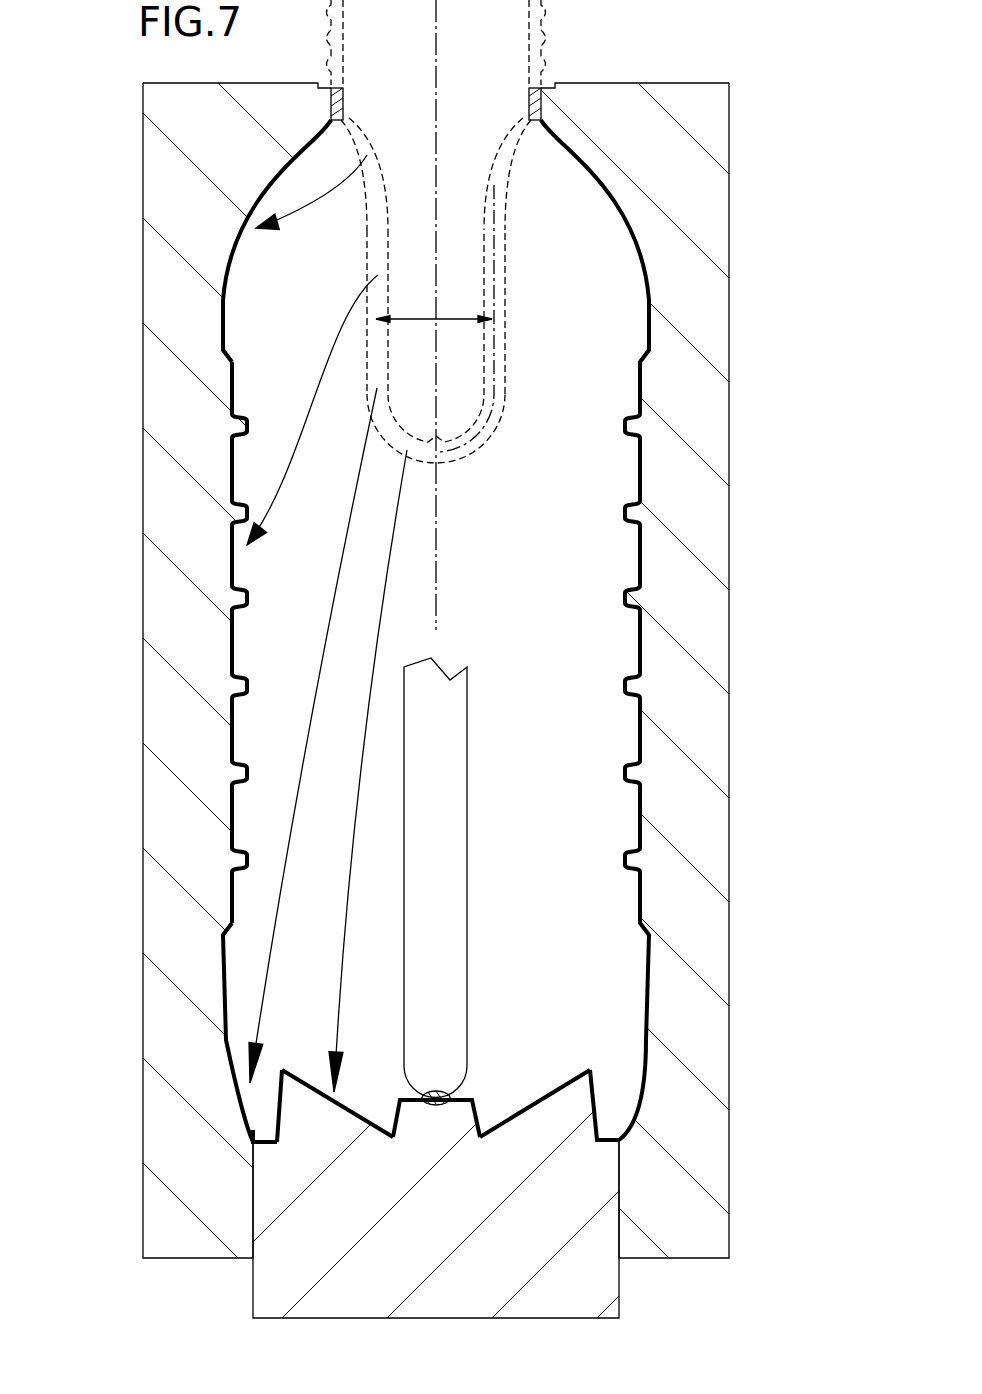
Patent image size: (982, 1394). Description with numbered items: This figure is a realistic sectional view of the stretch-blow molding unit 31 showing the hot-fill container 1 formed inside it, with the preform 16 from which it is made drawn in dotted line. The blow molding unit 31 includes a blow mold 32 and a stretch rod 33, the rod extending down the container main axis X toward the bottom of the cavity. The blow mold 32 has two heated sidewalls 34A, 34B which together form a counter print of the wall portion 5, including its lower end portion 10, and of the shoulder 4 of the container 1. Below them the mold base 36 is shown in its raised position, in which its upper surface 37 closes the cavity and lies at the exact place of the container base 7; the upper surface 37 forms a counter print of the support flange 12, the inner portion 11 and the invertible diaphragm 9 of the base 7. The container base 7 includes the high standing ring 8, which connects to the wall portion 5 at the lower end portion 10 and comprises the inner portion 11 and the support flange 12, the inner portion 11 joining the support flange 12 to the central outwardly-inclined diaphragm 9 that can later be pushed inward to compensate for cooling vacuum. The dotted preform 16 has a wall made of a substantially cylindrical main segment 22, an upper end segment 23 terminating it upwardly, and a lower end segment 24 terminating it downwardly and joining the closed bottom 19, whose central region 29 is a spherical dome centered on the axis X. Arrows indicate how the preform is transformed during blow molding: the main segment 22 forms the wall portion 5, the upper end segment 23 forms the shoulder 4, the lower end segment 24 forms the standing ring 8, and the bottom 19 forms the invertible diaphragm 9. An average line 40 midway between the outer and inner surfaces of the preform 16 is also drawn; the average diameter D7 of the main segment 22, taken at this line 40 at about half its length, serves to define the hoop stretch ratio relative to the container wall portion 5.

The hot-fill container 1 is at (439, 664).
The shoulder 4 is at (243, 230).
The wall portion 5 is at (232, 560).
The base 7 is at (418, 1139).
The standing ring 8 is at (248, 1156).
The invertible diaphragm 9 is at (348, 1108).
The lower end portion 10 is at (240, 1120).
The inner portion 11 is at (283, 1110).
The support flange 12 is at (275, 1142).
The preform 16 is at (521, 254).
The bottom 19 is at (477, 445).
The main segment 22 is at (380, 258).
The upper end segment 23 is at (373, 165).
The lower end segment 24 is at (380, 378).
The central region 29 is at (436, 418).
The blow molding unit 31 is at (491, 694).
The blow mold 32 is at (491, 670).
The stretch rod 33 is at (440, 917).
The sidewall 34A is at (700, 530).
The sidewall 34B is at (162, 497).
The mold base 36 is at (602, 1297).
The upper surface 37 is at (511, 1130).
The average line 40 is at (511, 346).
The main axis X is at (438, 72).
The average diameter D7 is at (434, 306).